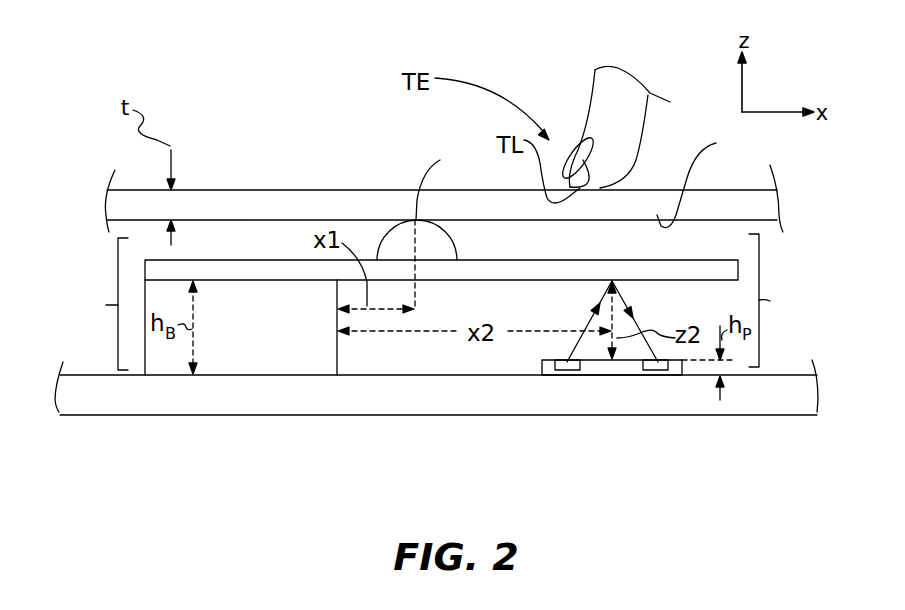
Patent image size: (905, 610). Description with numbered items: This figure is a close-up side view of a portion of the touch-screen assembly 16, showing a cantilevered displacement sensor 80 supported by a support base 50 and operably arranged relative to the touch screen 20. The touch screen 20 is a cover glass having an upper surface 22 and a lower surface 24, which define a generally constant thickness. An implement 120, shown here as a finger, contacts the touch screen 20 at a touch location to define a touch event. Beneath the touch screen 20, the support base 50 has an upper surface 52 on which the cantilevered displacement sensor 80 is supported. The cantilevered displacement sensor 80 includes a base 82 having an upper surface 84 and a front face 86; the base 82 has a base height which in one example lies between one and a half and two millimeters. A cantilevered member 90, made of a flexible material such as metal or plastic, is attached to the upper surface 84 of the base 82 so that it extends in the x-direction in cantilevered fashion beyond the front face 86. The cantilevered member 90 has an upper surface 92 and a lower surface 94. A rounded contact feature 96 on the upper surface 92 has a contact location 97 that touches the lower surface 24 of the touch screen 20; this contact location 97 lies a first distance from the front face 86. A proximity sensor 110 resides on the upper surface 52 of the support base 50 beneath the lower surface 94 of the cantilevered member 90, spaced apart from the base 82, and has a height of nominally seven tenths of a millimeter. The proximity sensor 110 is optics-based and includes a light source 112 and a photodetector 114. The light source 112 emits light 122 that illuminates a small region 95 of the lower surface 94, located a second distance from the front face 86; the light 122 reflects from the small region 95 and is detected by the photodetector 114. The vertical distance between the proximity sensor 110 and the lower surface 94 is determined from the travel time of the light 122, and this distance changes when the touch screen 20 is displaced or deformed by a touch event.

The touch-screen assembly 16 is at (180, 100).
The touch screen 20 is at (140, 169).
The upper surface 22 is at (748, 188).
The lower surface 24 is at (705, 178).
The support base 50 is at (119, 403).
The upper surface 52 is at (798, 377).
The cantilevered displacement sensor 80 is at (100, 304).
The base 82 is at (240, 353).
The upper surface 84 is at (212, 272).
The front face 86 is at (340, 360).
The cantilevered member 90 is at (272, 238).
The upper surface 92 is at (514, 258).
The lower surface 94 is at (732, 281).
The small region 95 is at (598, 287).
The contact feature 96 is at (372, 230).
The contact location 97 is at (443, 226).
The proximity sensor 110 is at (542, 366).
The light source 112 is at (560, 375).
The photodetector 114 is at (653, 375).
The implement 120 is at (613, 110).
The light 122 is at (634, 297).